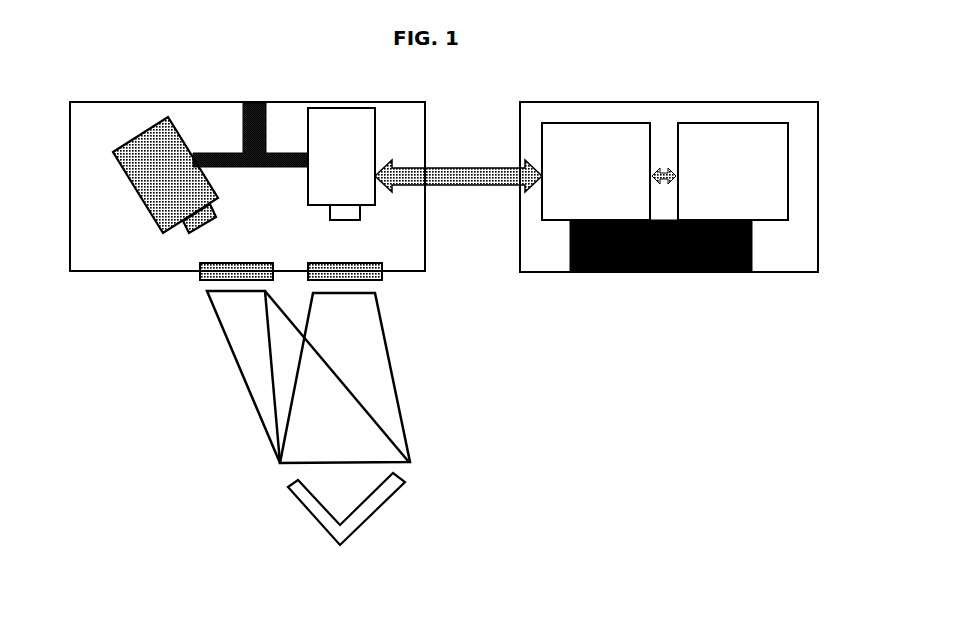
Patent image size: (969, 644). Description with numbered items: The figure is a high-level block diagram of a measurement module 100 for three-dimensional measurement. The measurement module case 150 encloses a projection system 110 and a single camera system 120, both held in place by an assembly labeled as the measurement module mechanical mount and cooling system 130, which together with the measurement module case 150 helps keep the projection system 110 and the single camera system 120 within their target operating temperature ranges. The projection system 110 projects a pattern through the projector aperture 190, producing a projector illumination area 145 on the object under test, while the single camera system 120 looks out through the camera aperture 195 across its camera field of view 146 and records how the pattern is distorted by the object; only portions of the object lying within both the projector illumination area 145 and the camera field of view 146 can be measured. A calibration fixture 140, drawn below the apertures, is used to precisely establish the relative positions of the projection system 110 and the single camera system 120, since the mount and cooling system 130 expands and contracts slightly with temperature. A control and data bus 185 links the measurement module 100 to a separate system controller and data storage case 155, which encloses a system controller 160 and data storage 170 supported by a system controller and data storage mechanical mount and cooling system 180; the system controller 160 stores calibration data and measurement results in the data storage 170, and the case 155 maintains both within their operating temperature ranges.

The measurement module 100 is at (348, 587).
The projection system 110 is at (341, 164).
The single camera system 120 is at (165, 175).
The measurement module mechanical mount and cooling system 130 is at (242, 135).
The calibration fixture 140 is at (372, 513).
The projector illumination area 145 is at (397, 383).
The camera field of view 146 is at (267, 433).
The measurement module case 150 is at (98, 273).
The system controller and data storage case 155 is at (752, 273).
The system controller 160 is at (596, 171).
The data storage 170 is at (733, 171).
The system controller and data storage mechanical mount and cooling system 180 is at (570, 255).
The control and data bus 185 is at (447, 160).
The projector aperture 190 is at (375, 282).
The camera aperture 195 is at (213, 281).